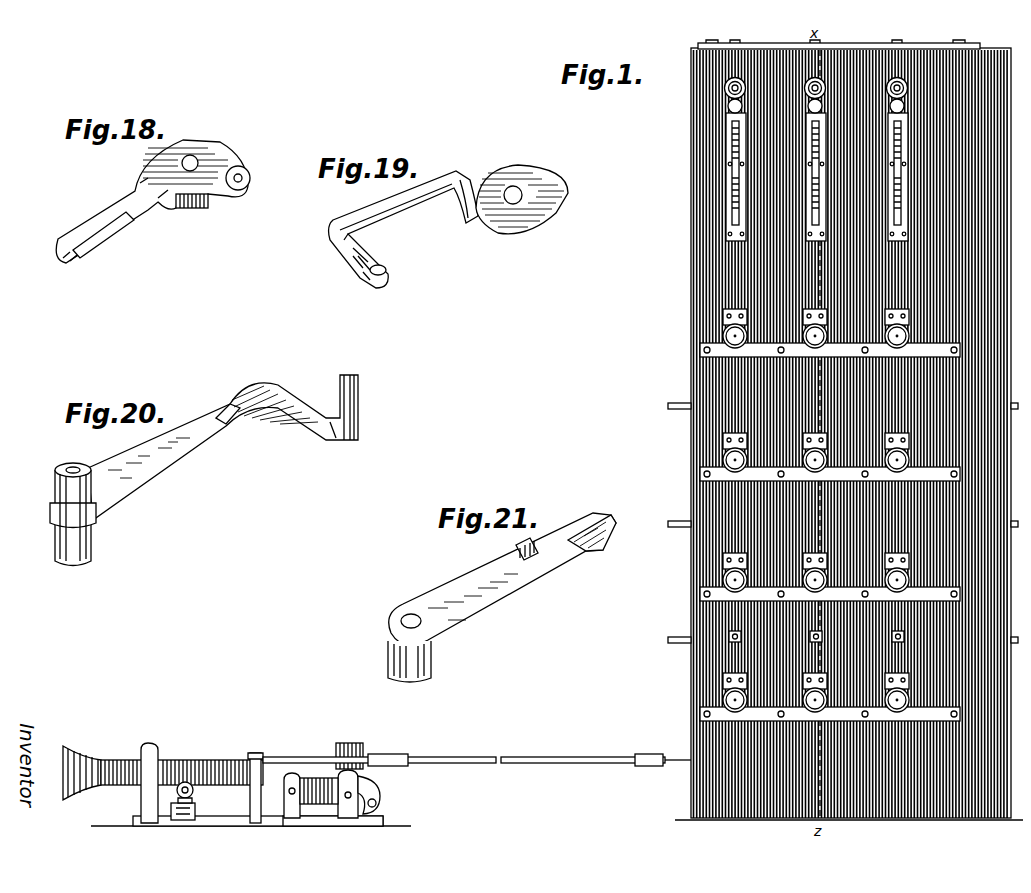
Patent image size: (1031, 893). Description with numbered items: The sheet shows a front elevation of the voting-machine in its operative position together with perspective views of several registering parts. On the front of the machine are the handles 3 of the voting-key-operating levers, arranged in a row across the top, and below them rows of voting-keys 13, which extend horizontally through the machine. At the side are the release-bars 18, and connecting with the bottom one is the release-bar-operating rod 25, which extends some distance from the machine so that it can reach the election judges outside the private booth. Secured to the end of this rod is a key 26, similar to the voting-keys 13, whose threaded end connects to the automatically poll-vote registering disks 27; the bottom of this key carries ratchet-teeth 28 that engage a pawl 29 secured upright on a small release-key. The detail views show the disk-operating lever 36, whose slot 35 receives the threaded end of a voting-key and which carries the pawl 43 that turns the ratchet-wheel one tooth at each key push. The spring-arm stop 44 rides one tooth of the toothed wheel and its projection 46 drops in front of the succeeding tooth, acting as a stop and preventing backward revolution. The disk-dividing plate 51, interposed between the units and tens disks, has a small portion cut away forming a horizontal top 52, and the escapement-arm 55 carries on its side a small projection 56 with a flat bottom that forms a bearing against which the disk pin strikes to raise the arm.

In FIG. 1, the handle 3 is at (717, 83).
In FIG. 1, the voting-key 13 is at (901, 329).
In FIG. 1, the release-bar 18 is at (660, 400).
In FIG. 1, the release-bar-operating rod 25 is at (477, 771).
In FIG. 1, the key 26 is at (163, 773).
In FIG. 1, the automatically poll-vote registering disks 27 is at (362, 788).
In FIG. 1, the ratchet-teeth 28 is at (210, 778).
In FIG. 1, the pawl 29 is at (166, 784).
In FIG. 18, the slot 35 is at (64, 255).
In FIG. 18, the disk-operating lever 36 is at (185, 178).
In FIG. 18, the pawl 43 is at (237, 163).
In FIG. 20, the spring-arm stop 44 is at (204, 470).
In FIG. 20, the projection 46 is at (224, 407).
In FIG. 19, the disk-dividing plate 51 is at (483, 217).
In FIG. 19, the horizontal top 52 is at (538, 204).
In FIG. 21, the escapement-arm 55 is at (502, 597).
In FIG. 21, the projection 56 is at (508, 545).